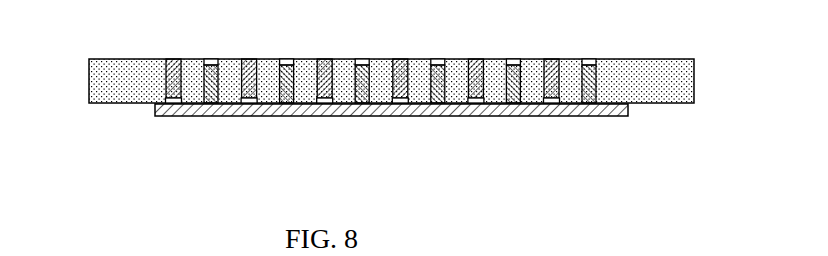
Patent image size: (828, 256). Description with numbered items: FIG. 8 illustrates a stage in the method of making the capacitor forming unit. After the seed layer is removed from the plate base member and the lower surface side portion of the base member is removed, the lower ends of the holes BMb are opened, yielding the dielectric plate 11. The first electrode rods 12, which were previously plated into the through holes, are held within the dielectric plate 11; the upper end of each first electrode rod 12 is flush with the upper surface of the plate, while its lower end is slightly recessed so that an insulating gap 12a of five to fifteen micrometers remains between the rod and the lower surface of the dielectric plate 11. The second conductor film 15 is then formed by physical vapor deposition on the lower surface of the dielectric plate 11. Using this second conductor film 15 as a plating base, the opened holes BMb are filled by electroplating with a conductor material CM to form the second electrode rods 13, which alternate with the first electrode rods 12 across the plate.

The dielectric plate 11 is at (102, 82).
The first electrode rod 12 is at (172, 59).
The insulating gap 12a is at (171, 117).
The second electrode rod 13 is at (288, 63).
The second conductor film 15 is at (341, 117).
The hole BMb is at (277, 78).